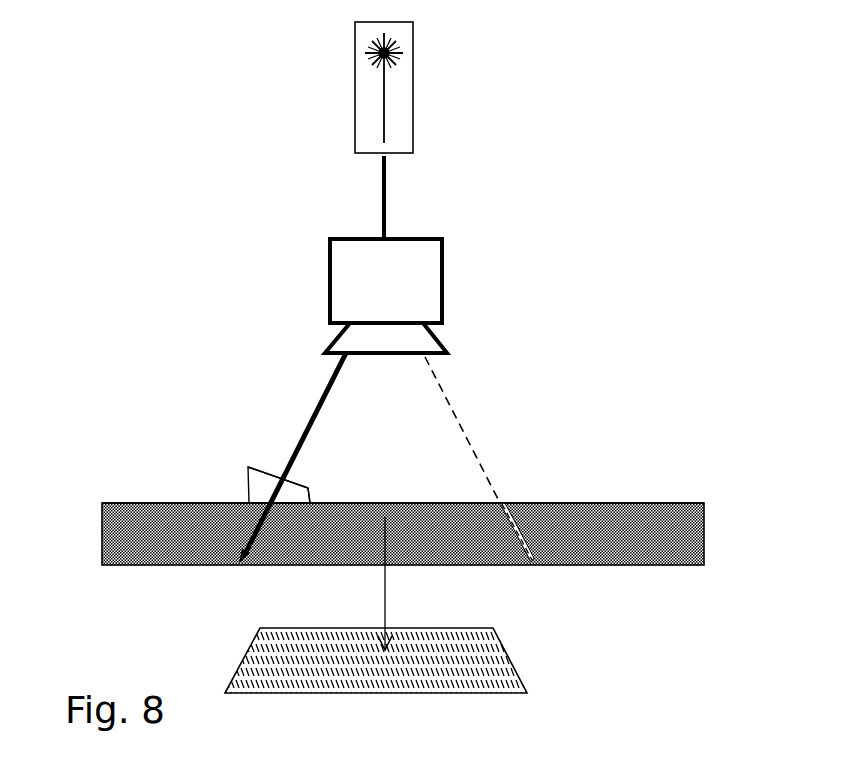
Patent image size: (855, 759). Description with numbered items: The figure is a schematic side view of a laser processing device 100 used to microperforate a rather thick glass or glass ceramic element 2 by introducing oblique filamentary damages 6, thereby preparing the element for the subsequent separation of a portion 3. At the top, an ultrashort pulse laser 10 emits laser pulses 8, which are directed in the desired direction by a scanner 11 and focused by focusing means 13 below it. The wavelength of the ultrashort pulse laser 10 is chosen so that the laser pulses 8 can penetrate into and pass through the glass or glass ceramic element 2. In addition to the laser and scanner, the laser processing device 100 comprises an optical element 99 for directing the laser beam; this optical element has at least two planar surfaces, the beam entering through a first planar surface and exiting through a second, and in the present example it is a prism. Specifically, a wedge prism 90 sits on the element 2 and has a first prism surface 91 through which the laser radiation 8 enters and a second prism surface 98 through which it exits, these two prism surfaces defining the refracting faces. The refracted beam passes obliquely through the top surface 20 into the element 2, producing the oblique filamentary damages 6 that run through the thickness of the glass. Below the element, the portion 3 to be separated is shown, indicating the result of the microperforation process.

The laser processing device 100 is at (281, 133).
The ultrashort pulse laser 10 is at (413, 113).
The scanner 11 is at (442, 267).
The focusing means 13 is at (445, 345).
The laser pulses 8 is at (311, 418).
The oblique filamentary damages 6 is at (528, 503).
The glass or glass ceramic element 2 is at (682, 523).
The top surface of substrate 20 is at (147, 503).
The wedge prism 90 is at (250, 503).
The first prism surface 91 is at (268, 472).
The second prism surface 98 is at (288, 503).
The optical element 99 is at (308, 503).
The portion 3 is at (485, 665).